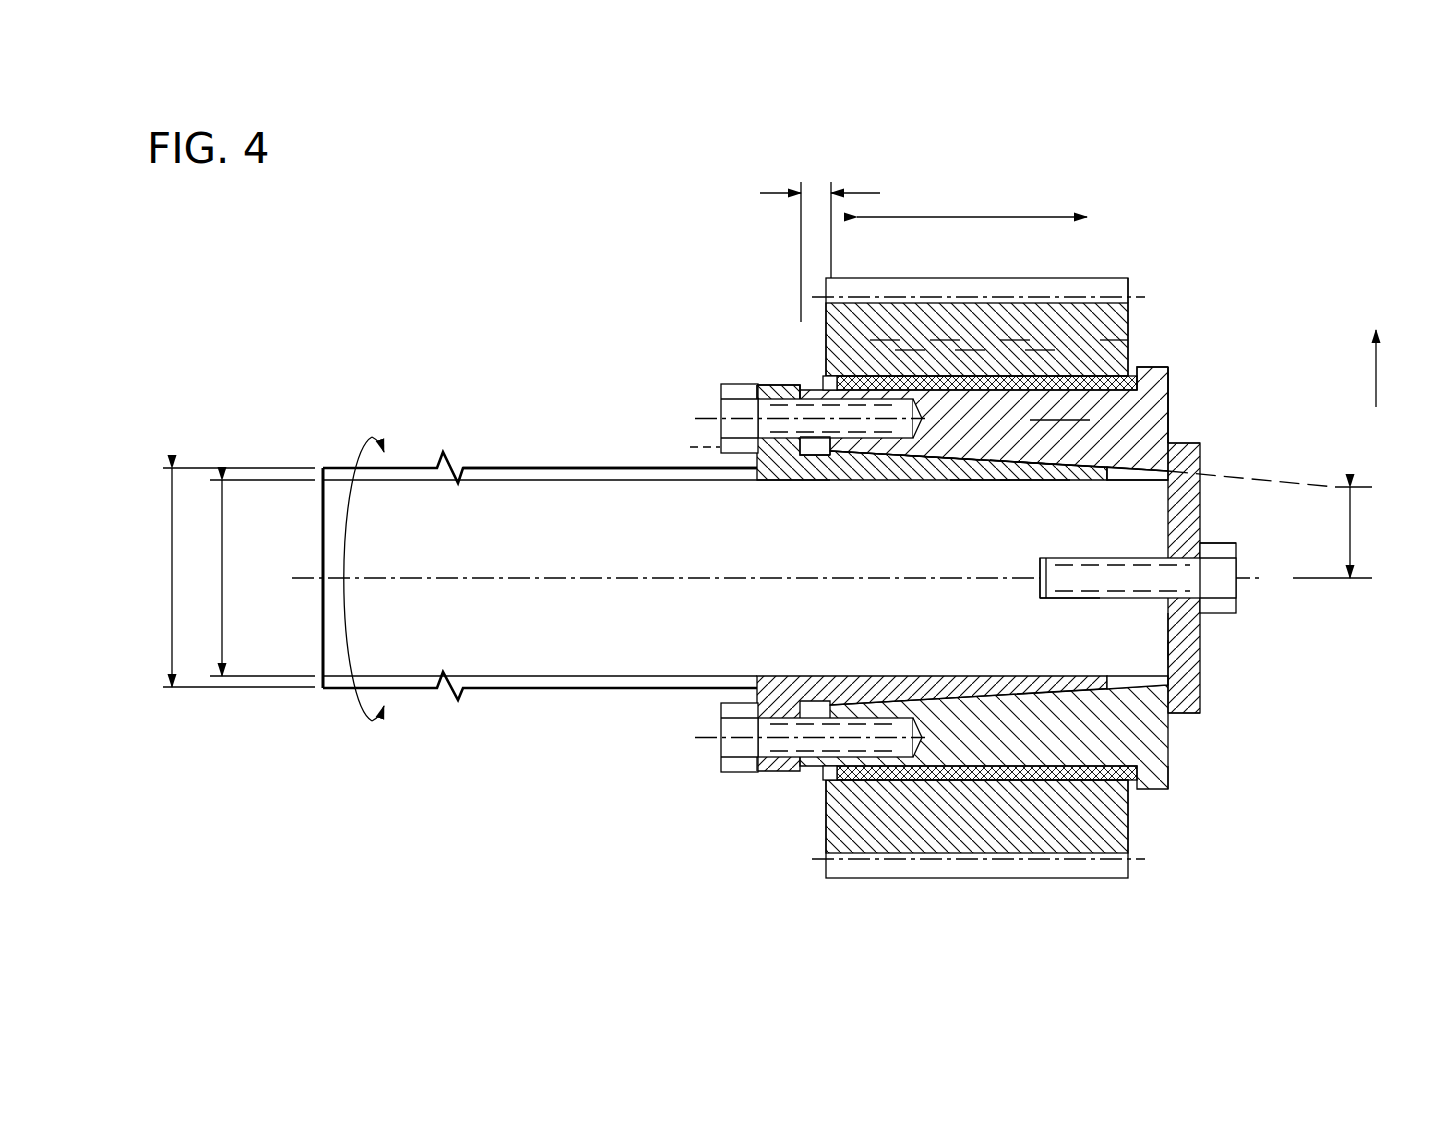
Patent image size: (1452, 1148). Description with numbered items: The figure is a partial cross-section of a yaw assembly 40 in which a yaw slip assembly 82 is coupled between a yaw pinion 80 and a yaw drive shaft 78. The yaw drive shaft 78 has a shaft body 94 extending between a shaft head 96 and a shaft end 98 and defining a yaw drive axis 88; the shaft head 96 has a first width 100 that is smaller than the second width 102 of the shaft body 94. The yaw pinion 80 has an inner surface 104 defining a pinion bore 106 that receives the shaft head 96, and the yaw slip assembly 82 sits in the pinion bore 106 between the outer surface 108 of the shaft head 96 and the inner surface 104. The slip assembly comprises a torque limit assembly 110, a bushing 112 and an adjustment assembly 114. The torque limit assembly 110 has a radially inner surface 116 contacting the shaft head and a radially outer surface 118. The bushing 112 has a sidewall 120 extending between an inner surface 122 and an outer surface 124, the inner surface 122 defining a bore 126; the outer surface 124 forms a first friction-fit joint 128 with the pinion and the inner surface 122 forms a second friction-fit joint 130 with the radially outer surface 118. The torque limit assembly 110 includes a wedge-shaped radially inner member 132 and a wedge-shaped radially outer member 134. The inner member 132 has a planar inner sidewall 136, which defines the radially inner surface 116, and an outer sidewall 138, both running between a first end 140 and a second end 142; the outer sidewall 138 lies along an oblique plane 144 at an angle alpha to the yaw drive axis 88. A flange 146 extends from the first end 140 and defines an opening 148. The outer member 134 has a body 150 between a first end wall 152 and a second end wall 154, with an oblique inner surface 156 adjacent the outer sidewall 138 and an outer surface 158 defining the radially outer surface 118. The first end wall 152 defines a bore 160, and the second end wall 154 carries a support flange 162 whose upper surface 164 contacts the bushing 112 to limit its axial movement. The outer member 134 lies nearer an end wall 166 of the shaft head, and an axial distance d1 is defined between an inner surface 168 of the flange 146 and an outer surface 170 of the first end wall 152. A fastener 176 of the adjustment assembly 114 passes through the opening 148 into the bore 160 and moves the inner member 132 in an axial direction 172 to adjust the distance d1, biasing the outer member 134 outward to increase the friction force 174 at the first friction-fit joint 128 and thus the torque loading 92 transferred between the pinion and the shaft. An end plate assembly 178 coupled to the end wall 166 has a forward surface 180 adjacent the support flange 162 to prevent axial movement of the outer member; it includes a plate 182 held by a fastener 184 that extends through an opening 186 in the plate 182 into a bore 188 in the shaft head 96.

The yaw assembly 40 is at (580, 322).
The yaw drive shaft 78 is at (527, 460).
The yaw pinion 80 is at (1152, 280).
The yaw slip assembly 82 is at (1274, 338).
The yaw drive axis 88 is at (300, 576).
The torque loading 92 is at (370, 437).
The shaft body 94 is at (589, 467).
The shaft head 96 is at (1135, 657).
The shaft end 98 is at (280, 708).
The first width 100 is at (222, 620).
The second width 102 is at (172, 528).
The inner surface 104 is at (1113, 338).
The pinion bore 106 is at (1264, 405).
The outer surface 108 is at (980, 482).
The torque limit assembly 110 is at (1227, 388).
The bushing 112 is at (850, 376).
The adjustment assembly 114 is at (746, 360).
The radially inner surface 116 is at (1036, 482).
The radially outer surface 118 is at (1086, 345).
The sidewall 120 is at (882, 372).
The inner surface 122 is at (966, 380).
The outer surface 124 is at (940, 374).
The bore 126 is at (1227, 436).
The first friction-fit joint 128 is at (1010, 378).
The second friction-fit joint 130 is at (1168, 412).
The radially inner member 132 is at (812, 478).
The radially outer member 134 is at (1168, 441).
The inner sidewall 136 is at (888, 482).
The outer sidewall 138 is at (936, 466).
The first end 140 is at (790, 447).
The second end 142 is at (1106, 474).
The plane 144 is at (1335, 487).
The flange 146 is at (766, 392).
The opening 148 is at (800, 383).
The body 150 is at (1058, 443).
The first end wall 152 is at (833, 447).
The second end wall 154 is at (1168, 422).
The inner surface 156 is at (1015, 466).
The outer surface 158 is at (1040, 380).
The bore 160 is at (902, 380).
The support flange 162 is at (1158, 366).
The upper surface 164 is at (1168, 385).
The end wall 166 is at (1200, 515).
The inner surface 168 is at (802, 415).
The outer surface 170 is at (826, 454).
The axial direction 172 is at (946, 216).
The friction force 174 is at (1378, 371).
The fastener 176 is at (722, 408).
The end plate assembly 178 is at (1245, 620).
The forward surface 180 is at (1168, 629).
The plate 182 is at (1196, 687).
The fastener 184 is at (1225, 587).
The opening 186 is at (1155, 572).
The bore 188 is at (1068, 600).
The axial distance d1 is at (817, 186).
The angle α alpha is at (1352, 535).